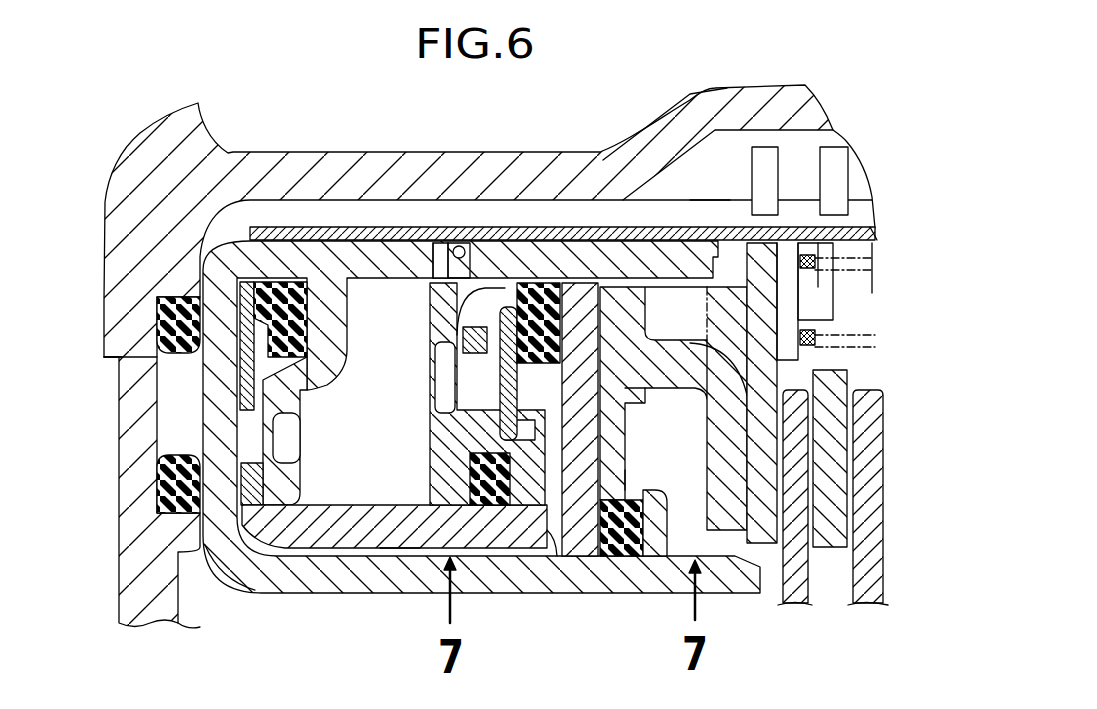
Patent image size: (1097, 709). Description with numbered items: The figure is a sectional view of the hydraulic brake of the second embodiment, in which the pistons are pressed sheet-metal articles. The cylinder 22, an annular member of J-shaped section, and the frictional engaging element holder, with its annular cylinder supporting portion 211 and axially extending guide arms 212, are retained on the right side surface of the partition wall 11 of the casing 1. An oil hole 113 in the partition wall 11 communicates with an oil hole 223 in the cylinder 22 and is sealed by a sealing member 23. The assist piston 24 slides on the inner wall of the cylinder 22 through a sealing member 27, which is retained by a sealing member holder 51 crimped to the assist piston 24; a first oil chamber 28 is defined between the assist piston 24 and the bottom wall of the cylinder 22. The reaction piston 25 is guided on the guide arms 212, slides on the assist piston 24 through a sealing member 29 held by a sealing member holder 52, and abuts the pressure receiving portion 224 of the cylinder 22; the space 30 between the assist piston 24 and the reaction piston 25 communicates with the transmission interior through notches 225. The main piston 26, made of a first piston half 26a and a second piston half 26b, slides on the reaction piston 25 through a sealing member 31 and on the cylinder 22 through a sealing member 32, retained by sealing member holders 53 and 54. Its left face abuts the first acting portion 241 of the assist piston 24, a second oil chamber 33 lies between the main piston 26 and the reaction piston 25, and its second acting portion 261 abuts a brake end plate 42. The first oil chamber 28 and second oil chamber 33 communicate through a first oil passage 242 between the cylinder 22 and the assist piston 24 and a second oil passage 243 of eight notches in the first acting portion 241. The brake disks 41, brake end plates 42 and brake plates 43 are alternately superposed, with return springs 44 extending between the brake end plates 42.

The casing 1 is at (500, 150).
The partition wall 11 is at (705, 193).
The oil hole 113 is at (121, 373).
The cylinder supporting portion 211 is at (366, 230).
The guide arms 212 is at (876, 229).
The cylinder 22 is at (287, 592).
The oil hole 223 is at (330, 421).
The pressure receiving portion 224 is at (462, 255).
The notches 225 is at (438, 252).
The sealing member 23 is at (176, 456).
The assist piston 24 is at (340, 505).
The first acting portion 241 is at (572, 558).
The first oil passage 242 is at (400, 549).
The second oil passage 243 is at (551, 545).
The reaction piston 25 is at (428, 337).
The main piston 26 is at (673, 407).
The first piston half 26a is at (602, 490).
The second piston half 26b is at (602, 387).
The second acting portion 261 is at (747, 341).
The sealing member 27 is at (307, 320).
The first oil chamber 28 is at (237, 376).
The sealing member 29 is at (470, 480).
The space 30 is at (392, 409).
The sealing member 31 is at (548, 282).
The sealing member 32 is at (624, 558).
The second oil chamber 33 is at (533, 414).
The brake disks 41 is at (857, 567).
The brake end plates 42 is at (746, 273).
The brake plates 43 is at (840, 382).
The return springs 44 is at (833, 331).
The sealing member holder 51 is at (257, 387).
The sealing member holder 52 is at (483, 437).
The sealing member holder 53 is at (457, 308).
The sealing member holder 54 is at (650, 542).